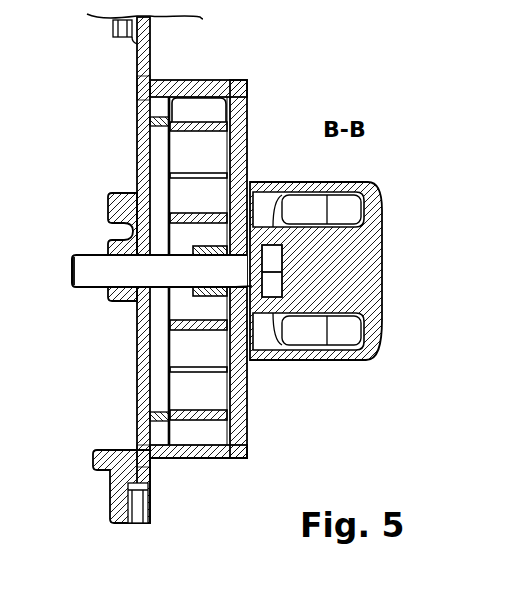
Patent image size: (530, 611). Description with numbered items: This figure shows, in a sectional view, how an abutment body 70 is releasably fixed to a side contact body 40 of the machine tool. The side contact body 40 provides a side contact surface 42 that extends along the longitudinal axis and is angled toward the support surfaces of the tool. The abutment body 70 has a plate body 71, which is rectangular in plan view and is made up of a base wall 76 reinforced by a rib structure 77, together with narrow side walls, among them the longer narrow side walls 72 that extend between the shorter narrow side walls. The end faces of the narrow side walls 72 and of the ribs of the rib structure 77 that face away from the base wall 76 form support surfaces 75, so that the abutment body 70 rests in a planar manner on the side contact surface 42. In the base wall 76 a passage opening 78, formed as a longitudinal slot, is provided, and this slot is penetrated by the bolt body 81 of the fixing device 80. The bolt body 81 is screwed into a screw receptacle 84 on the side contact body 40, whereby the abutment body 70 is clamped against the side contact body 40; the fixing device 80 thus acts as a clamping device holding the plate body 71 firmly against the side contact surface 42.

The side contact body 40 is at (118, 268).
The side contact surface 42 is at (150, 47).
The abutment body 70 is at (204, 275).
The plate body 71 is at (247, 390).
The longer narrow side wall 72 is at (194, 80).
The support surface 75 is at (134, 160).
The base wall 76 is at (247, 440).
The rib structure 77 is at (170, 370).
The passage opening 78 is at (283, 283).
The fixing device 80 is at (348, 248).
The bolt body 81 is at (78, 278).
The screw receptacle 84 is at (128, 302).